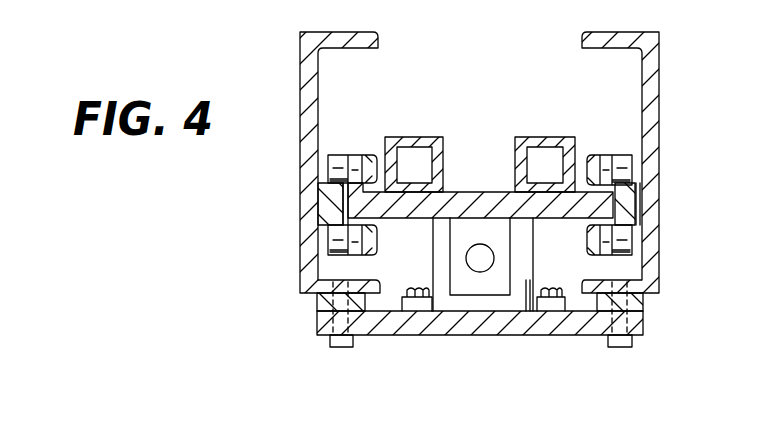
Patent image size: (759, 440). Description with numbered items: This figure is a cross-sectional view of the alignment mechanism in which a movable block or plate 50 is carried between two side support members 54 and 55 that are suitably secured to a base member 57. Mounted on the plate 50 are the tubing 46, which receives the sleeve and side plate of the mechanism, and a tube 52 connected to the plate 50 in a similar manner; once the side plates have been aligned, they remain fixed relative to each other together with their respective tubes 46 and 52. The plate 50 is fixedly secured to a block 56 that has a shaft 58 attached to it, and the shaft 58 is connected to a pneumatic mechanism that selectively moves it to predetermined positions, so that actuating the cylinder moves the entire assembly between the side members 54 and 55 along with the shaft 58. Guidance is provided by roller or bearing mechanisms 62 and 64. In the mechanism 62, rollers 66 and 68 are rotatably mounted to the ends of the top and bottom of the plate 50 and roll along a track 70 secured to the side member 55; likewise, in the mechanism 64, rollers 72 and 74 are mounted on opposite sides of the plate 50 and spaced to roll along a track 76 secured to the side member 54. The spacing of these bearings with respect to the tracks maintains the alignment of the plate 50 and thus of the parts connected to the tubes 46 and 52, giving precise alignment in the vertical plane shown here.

The tubing 46 is at (545, 136).
The plate 50 is at (472, 191).
The tube 52 is at (410, 136).
The support member 54 is at (660, 68).
The support member 55 is at (304, 42).
The block 56 is at (500, 253).
The base member 57 is at (633, 322).
The shaft 58 is at (466, 258).
The roller mechanism 62 is at (349, 148).
The roller mechanism 64 is at (611, 148).
The roller 66 is at (340, 170).
The roller 68 is at (340, 243).
The track 70 is at (330, 208).
The roller 72 is at (622, 162).
The roller 74 is at (620, 245).
The track 76 is at (628, 207).